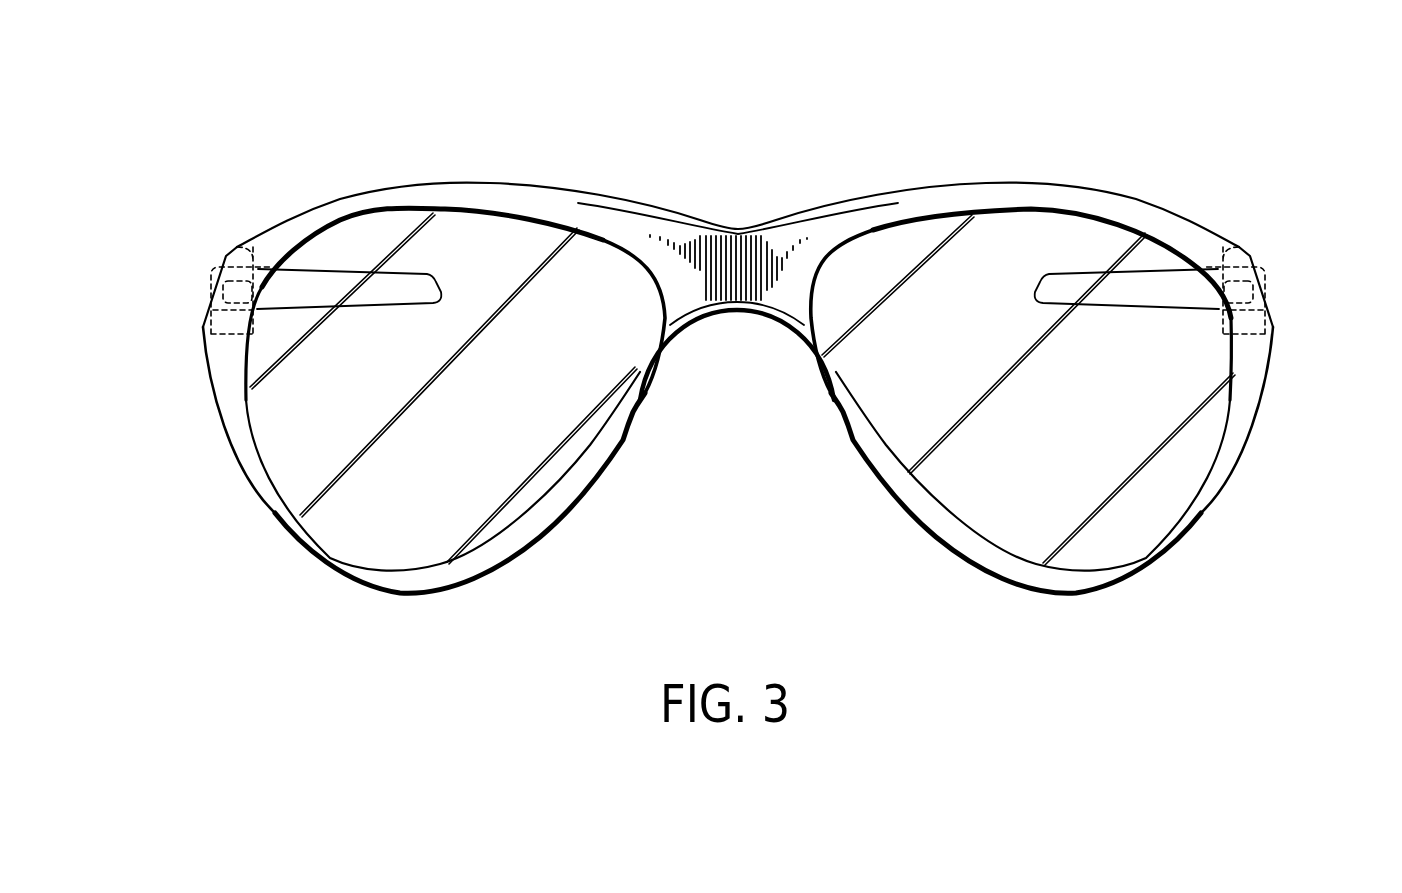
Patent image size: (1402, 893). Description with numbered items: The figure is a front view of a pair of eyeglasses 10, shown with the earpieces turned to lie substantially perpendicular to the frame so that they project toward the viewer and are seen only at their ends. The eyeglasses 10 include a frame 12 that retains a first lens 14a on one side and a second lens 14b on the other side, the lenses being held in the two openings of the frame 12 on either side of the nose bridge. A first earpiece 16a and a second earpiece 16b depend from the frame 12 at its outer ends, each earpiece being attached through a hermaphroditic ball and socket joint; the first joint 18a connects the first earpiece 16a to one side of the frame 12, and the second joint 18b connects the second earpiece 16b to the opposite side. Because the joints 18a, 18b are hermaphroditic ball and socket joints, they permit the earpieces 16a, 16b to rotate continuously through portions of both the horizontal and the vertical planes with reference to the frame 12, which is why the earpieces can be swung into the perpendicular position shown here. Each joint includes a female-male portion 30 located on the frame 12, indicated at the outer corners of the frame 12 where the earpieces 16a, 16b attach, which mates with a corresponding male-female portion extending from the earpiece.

The pair of eyeglasses 10 is at (364, 150).
The frame 12 is at (537, 540).
The first lens 14a is at (333, 507).
The second lens 14b is at (973, 497).
The first earpiece 16a is at (403, 297).
The second earpiece 16b is at (1133, 293).
The first hermaphroditic ball and socket joint 18a is at (190, 303).
The second hermaphroditic ball and socket joint 18b is at (1290, 305).
The female-male portion 30 is at (233, 253).